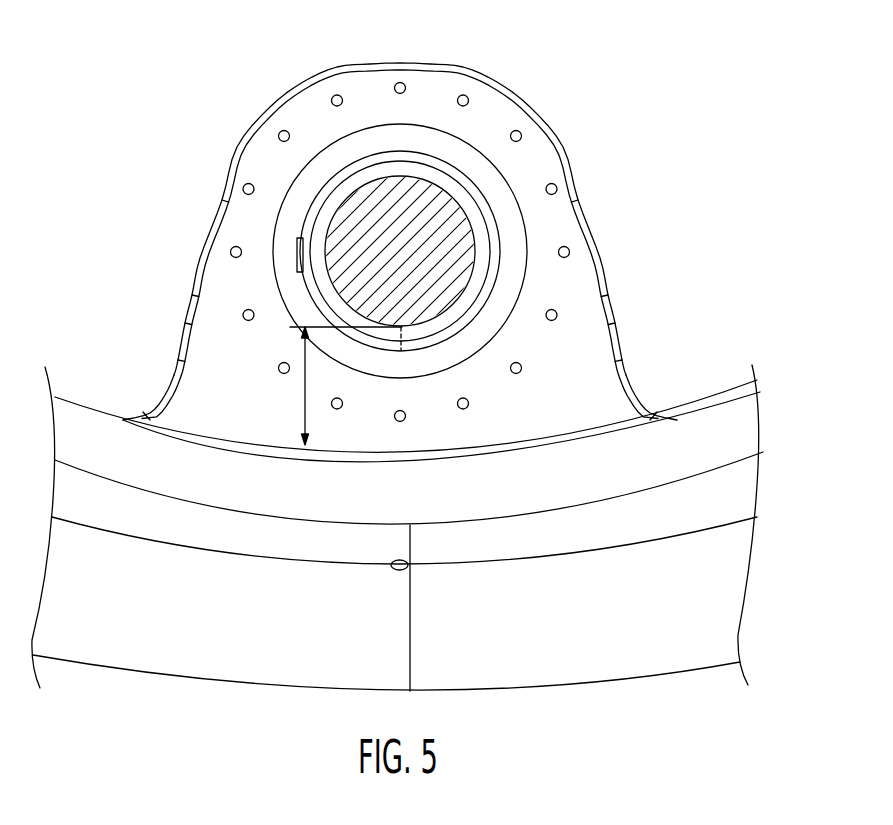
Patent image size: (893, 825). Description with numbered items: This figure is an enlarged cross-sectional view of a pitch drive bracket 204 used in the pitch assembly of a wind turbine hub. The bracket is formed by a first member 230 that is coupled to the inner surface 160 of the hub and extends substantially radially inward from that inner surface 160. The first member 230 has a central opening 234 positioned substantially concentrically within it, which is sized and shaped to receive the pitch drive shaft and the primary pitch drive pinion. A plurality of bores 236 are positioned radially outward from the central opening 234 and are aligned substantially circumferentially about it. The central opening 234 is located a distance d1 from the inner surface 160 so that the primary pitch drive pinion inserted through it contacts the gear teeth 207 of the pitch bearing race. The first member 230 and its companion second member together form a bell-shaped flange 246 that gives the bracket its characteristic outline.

The inner surface 160 is at (737, 393).
The pitch drive bracket 204 is at (498, 37).
The gear teeth 207 is at (173, 420).
The first member 230 is at (552, 143).
The central opening 234 is at (475, 252).
The bores 236 is at (557, 314).
The bell-shaped flange 246 is at (203, 262).
The distance d1 is at (304, 395).